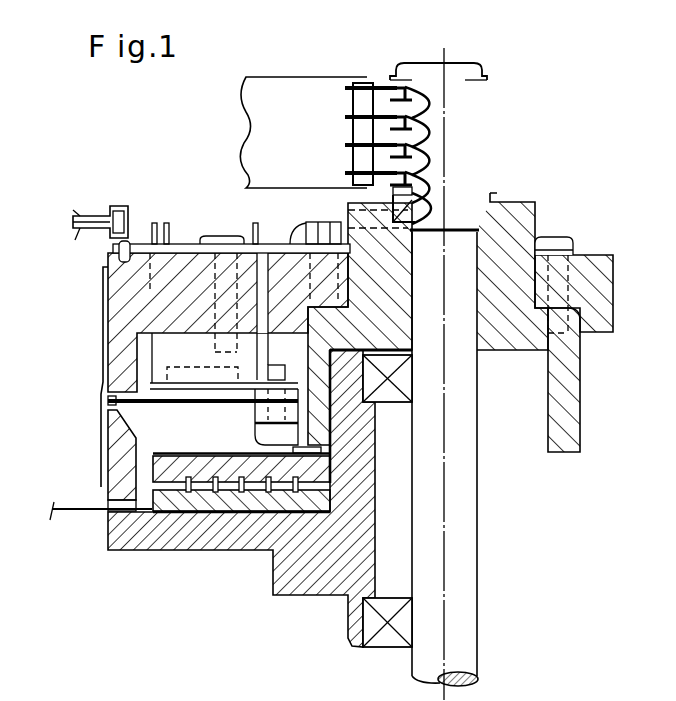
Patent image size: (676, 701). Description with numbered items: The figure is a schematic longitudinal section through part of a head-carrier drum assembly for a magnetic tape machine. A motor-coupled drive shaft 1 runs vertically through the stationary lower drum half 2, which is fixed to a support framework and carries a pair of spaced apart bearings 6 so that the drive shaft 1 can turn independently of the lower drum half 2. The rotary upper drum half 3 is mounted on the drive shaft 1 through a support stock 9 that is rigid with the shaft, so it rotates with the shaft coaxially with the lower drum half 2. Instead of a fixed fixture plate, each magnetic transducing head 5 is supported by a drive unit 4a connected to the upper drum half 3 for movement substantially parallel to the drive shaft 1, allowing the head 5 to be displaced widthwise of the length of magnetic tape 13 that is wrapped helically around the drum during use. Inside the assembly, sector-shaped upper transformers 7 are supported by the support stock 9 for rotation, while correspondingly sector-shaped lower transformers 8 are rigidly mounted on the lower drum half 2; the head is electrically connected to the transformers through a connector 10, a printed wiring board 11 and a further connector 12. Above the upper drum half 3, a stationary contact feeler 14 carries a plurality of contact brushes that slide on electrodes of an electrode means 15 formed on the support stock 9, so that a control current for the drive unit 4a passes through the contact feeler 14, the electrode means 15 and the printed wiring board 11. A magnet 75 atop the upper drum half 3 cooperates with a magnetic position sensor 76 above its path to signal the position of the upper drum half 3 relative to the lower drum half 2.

The drive shaft 1 is at (463, 467).
The lower drum half 2 is at (302, 594).
The upper drum half 3 is at (113, 290).
The drive unit 4a is at (107, 443).
The magnetic transducing head 5 is at (107, 400).
The bearings 6 is at (405, 382).
The upper transformers 7 is at (172, 483).
The lower transformers 8 is at (221, 497).
The support stock 9 is at (575, 393).
The connector 10 is at (150, 222).
The printed wiring board 11 is at (192, 243).
The connector 12 is at (308, 225).
The magnetic tape 13 is at (102, 330).
The contact feeler 14 is at (383, 83).
The electrode means 15 is at (465, 62).
The magnet 75 is at (117, 246).
The magnetic position sensor 76 is at (103, 214).